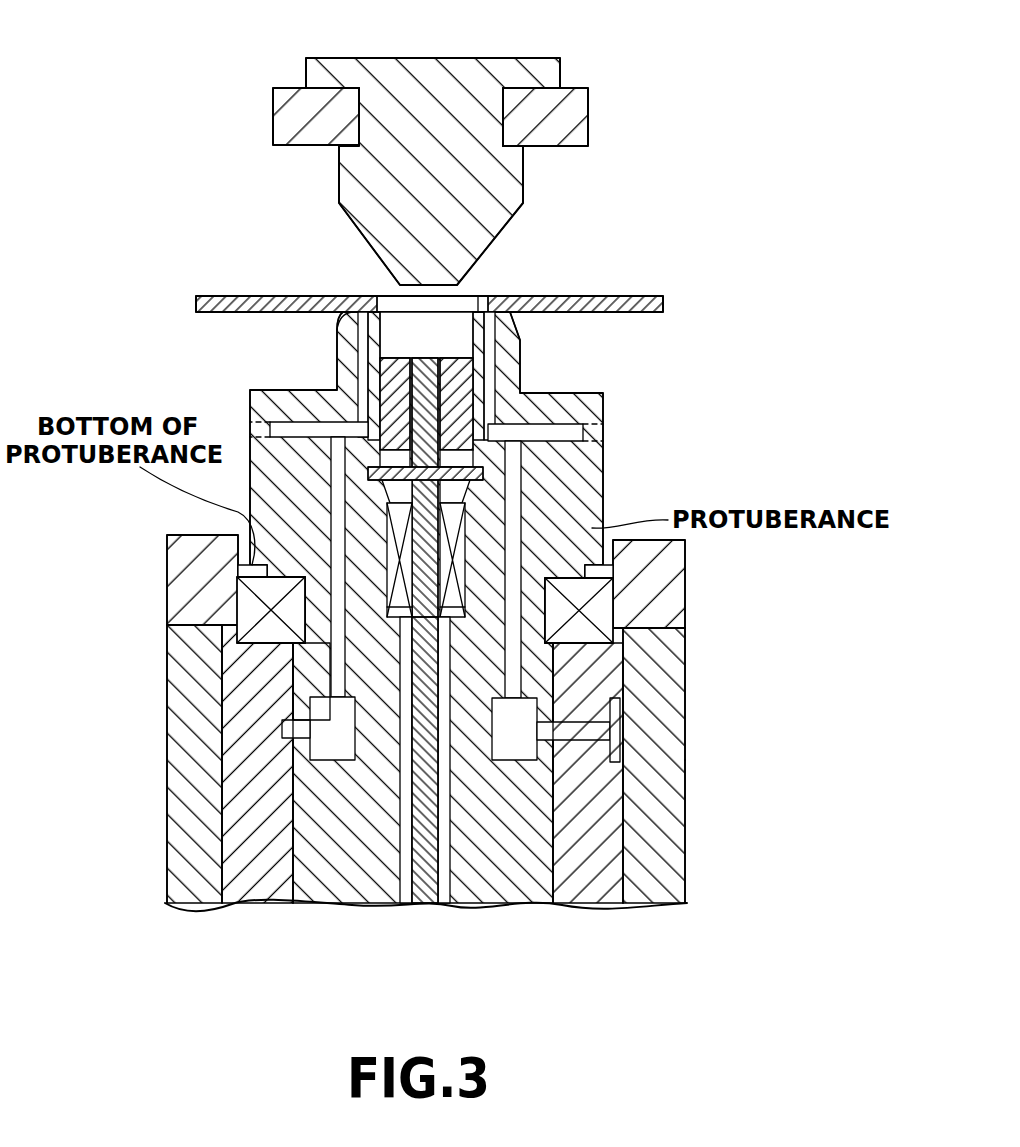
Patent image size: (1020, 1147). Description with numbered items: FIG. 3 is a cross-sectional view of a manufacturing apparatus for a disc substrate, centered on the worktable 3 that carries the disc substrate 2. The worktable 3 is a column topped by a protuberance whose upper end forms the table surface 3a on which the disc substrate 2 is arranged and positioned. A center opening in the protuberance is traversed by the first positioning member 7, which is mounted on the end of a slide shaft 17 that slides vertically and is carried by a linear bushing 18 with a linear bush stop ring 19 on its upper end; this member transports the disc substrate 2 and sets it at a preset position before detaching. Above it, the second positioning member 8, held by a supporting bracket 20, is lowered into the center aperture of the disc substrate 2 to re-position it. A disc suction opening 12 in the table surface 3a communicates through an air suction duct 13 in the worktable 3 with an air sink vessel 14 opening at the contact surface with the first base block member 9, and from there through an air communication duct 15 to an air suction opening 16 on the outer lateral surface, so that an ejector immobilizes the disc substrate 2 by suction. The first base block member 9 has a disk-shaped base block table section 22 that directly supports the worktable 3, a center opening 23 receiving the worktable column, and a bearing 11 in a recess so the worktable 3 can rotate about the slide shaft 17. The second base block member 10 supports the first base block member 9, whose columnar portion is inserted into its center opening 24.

The disc substrate 2 is at (640, 296).
The worktable 3 is at (512, 368).
The table surface 3a is at (350, 316).
The first positioning member 7 is at (512, 340).
The second positioning member 8 is at (548, 70).
The first base block member 9 is at (678, 572).
The second base block member 10 is at (672, 656).
The bearing 11 is at (603, 615).
The disc suction opening 12 is at (490, 320).
The air suction duct 13 is at (567, 432).
The air sink vessel 14 is at (527, 710).
The air communication duct 15 is at (593, 733).
The air suction opening 16 is at (663, 800).
The slide shaft 17 is at (423, 888).
The linear bushing 18 is at (455, 517).
The linear bush stop ring 19 is at (475, 472).
The supporting bracket 20 is at (572, 116).
The base block table section 22 is at (172, 590).
The center opening 23 is at (292, 672).
The center opening 24 is at (222, 806).